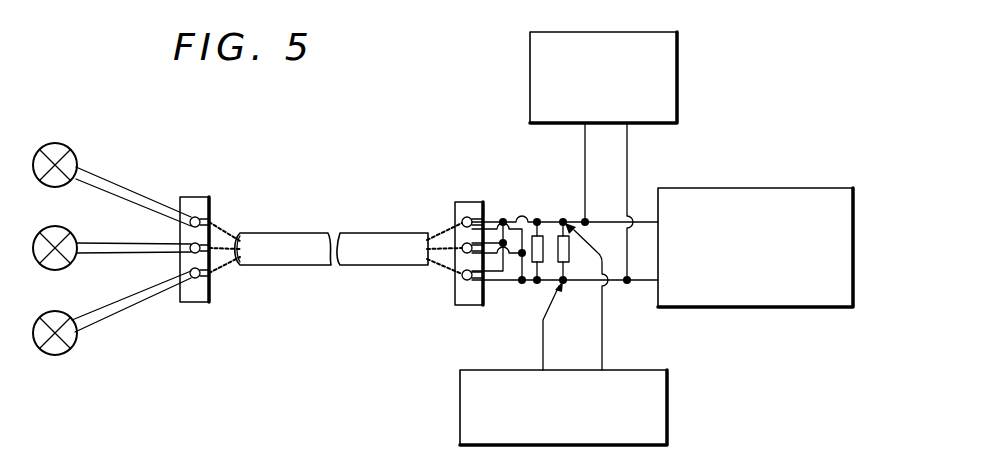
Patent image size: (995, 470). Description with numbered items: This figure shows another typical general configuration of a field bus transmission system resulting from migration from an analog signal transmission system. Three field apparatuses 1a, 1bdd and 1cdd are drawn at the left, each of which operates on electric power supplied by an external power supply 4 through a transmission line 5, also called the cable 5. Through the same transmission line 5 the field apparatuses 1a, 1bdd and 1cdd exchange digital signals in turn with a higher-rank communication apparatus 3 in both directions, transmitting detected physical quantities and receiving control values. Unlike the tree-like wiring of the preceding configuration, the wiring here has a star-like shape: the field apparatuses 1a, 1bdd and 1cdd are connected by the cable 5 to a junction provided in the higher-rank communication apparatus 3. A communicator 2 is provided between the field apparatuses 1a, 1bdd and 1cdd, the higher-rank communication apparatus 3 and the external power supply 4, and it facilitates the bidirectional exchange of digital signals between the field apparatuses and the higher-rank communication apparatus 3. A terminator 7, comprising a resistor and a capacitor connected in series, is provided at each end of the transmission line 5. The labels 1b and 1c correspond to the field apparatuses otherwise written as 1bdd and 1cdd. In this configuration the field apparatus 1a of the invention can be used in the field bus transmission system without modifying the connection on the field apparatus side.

The field apparatus 1a is at (42, 150).
The lamp (lighting device) 1b is at (40, 238).
The lamp (lighting device) 1c is at (40, 322).
The field apparatus 1bdd is at (99, 232).
The field apparatus 1cdd is at (99, 313).
The communicator 2 is at (670, 398).
The higher-rank communication apparatus 3 is at (770, 188).
The external power supply 4 is at (530, 60).
The transmission line 5 is at (270, 233).
The terminator 7 is at (557, 230).